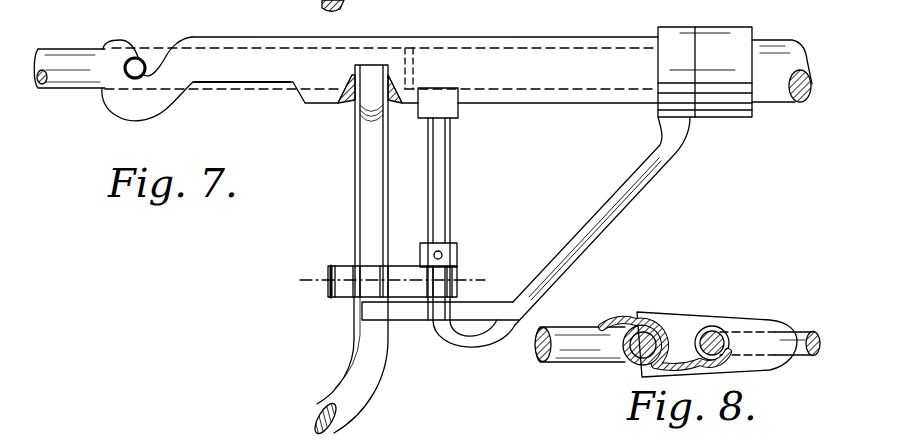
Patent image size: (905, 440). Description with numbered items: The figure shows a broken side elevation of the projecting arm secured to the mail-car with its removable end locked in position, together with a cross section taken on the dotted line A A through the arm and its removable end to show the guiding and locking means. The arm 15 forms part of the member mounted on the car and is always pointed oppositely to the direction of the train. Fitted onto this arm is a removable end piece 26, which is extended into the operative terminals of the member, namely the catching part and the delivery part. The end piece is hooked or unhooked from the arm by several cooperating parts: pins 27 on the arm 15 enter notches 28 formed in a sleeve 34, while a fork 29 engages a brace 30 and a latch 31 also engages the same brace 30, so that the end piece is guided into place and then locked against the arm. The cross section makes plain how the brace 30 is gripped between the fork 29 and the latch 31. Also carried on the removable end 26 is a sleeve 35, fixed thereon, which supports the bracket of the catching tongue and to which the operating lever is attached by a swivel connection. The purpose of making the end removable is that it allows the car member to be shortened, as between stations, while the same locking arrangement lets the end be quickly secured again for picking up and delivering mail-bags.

In FIG. 7, the arm 15 is at (246, 88).
In FIG. 7, the removable end piece 26 is at (800, 58).
In FIG. 7, the pins 27 is at (138, 62).
In FIG. 7, the notches 28 is at (350, 105).
In FIG. 8, the notches 28 is at (643, 345).
In FIG. 7, the fork 29 is at (420, 322).
In FIG. 8, the fork 29 is at (727, 325).
In FIG. 7, the brace 30 is at (358, 355).
In FIG. 8, the brace 30 is at (569, 326).
In FIG. 7, the latch 31 is at (365, 272).
In FIG. 8, the latch 31 is at (676, 356).
In FIG. 7, the sleeve 34 is at (523, 60).
In FIG. 7, the sleeve 35 is at (783, 79).